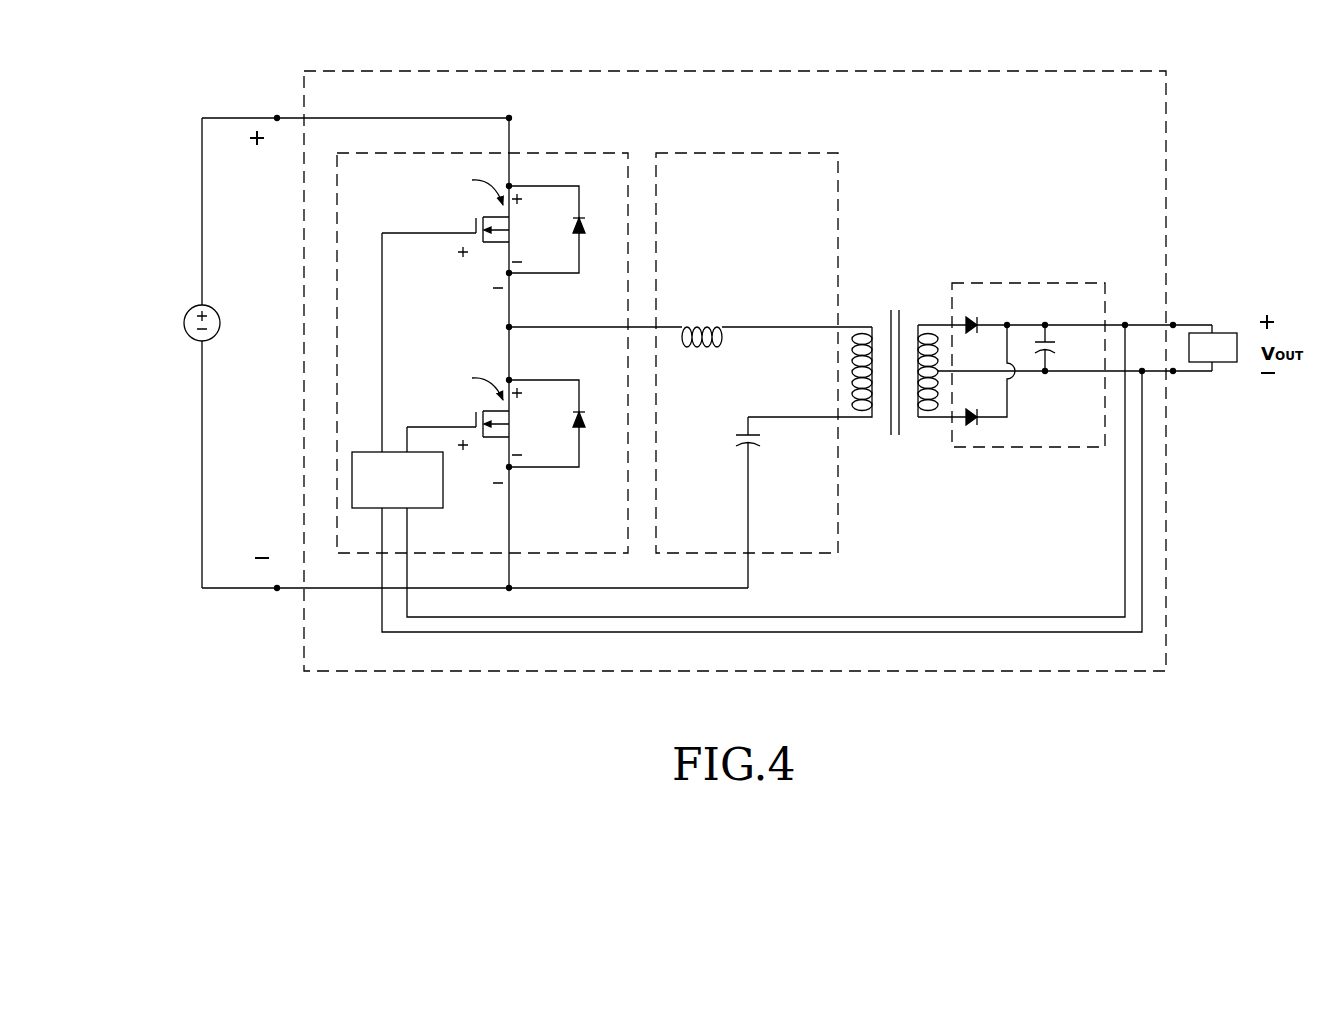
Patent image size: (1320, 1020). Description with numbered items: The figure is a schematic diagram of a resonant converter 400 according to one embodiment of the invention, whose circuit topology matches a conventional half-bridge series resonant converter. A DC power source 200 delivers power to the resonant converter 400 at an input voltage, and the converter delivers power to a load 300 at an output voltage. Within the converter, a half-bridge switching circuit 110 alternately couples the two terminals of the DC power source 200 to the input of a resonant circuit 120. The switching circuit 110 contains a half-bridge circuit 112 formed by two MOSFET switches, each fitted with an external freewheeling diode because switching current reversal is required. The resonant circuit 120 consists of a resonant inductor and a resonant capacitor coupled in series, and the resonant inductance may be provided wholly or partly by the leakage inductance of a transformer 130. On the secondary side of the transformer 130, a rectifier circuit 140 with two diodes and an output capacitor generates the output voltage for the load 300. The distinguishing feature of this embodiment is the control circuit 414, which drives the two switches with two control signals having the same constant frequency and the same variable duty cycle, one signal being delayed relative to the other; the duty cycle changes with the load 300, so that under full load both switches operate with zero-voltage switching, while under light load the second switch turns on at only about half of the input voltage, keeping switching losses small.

The resonant converter 400 is at (803, 68).
The half-bridge switching circuit 110 is at (571, 150).
The half-bridge circuit 112 is at (438, 214).
The resonant circuit 120 is at (746, 150).
The transformer 130 is at (896, 294).
The rectifier circuit 140 is at (1039, 282).
The DC power source 200 is at (183, 323).
The load 300 is at (1222, 333).
The control circuit 414 is at (425, 508).